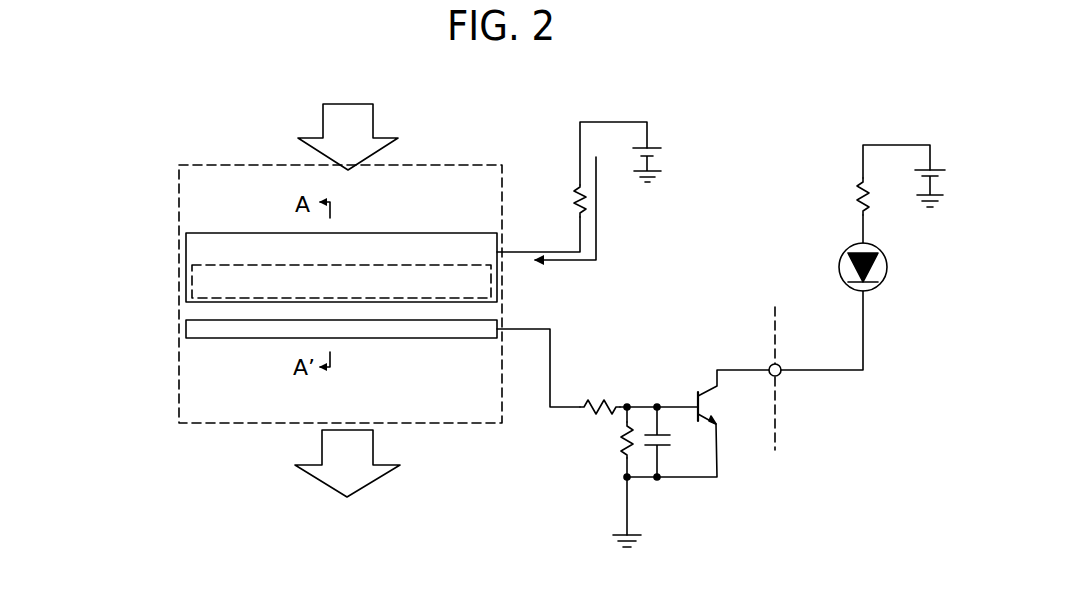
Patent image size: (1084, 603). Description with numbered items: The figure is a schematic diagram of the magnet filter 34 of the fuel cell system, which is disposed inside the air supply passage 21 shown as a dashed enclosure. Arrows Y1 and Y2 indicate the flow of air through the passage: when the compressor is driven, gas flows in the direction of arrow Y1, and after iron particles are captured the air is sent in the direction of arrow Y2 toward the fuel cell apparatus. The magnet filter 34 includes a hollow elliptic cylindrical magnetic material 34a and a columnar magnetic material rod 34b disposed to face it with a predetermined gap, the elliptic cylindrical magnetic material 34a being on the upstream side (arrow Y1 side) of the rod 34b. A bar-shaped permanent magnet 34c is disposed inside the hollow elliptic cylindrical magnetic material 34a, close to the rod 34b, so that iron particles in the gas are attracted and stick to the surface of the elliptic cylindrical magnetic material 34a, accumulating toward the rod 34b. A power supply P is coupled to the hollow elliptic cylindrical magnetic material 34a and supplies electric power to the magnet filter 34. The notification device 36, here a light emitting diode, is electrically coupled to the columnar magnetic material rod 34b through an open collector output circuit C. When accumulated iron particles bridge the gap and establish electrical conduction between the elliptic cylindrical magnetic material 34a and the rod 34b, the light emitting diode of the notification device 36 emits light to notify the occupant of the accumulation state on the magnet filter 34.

The air supply passage 21 is at (179, 185).
The magnet filter 34 is at (100, 232).
The hollow elliptic cylindrical magnetic material 34a is at (186, 253).
The columnar magnetic material rod 34b is at (186, 329).
The permanent magnet 34c is at (192, 285).
The notification device 36 is at (840, 258).
The power supply P is at (669, 139).
The control circuit C is at (638, 392).
The arrow Y1 is at (362, 123).
The arrow Y2 is at (362, 448).